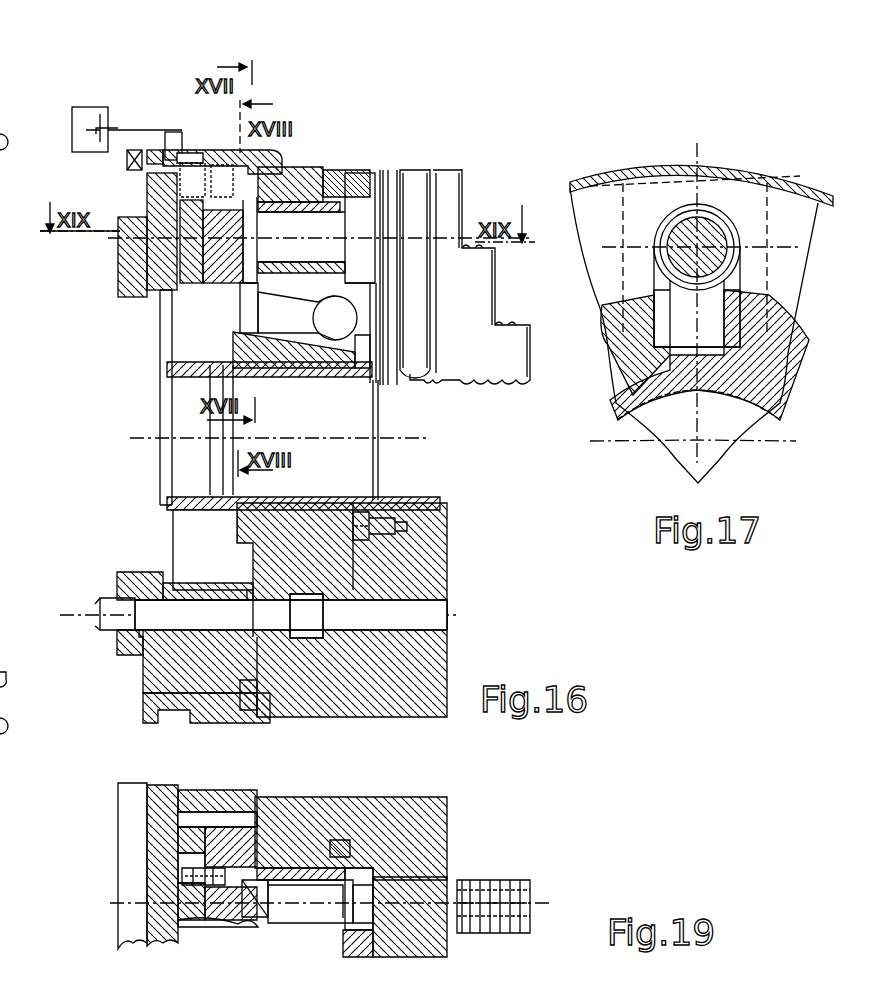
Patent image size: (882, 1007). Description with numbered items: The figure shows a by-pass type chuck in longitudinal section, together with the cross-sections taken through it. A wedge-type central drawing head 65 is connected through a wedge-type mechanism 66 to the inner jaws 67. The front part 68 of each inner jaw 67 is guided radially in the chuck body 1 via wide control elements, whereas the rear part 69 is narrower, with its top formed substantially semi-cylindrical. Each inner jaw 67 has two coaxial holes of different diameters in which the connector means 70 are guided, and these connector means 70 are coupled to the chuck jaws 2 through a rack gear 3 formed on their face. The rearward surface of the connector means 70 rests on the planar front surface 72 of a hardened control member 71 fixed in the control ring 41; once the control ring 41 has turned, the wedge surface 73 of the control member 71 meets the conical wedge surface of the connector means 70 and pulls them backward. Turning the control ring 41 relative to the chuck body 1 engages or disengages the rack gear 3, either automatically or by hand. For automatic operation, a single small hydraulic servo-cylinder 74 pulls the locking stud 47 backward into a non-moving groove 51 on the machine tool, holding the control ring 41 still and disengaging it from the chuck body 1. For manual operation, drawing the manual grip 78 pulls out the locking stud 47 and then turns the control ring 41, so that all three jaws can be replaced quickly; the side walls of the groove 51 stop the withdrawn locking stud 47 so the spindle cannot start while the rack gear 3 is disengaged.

In FIG. 16, the chuck body 1 is at (446, 549).
In FIG. 19, the chuck body 1 is at (438, 814).
In FIG. 16, the chuck jaws 2 is at (460, 220).
In FIG. 19, the chuck jaws 2 is at (508, 880).
In FIG. 16, the rack gear 3 is at (415, 238).
In FIG. 16, the control ring 41 is at (118, 257).
In FIG. 17, the control ring 41 is at (660, 180).
In FIG. 16, the locking stud 47 is at (285, 162).
In FIG. 16, the groove 51 is at (127, 169).
In FIG. 16, the central drawing head 65 is at (235, 351).
In FIG. 17, the central drawing head 65 is at (783, 370).
In FIG. 16, the wedge-type mechanism 66 is at (270, 318).
In FIG. 17, the wedge-type mechanism 66 is at (748, 325).
In FIG. 16, the inner jaws 67 is at (364, 180).
In FIG. 17, the inner jaws 67 is at (640, 300).
In FIG. 19, the inner jaws 67 is at (356, 872).
In FIG. 19, the front part of the inner jaws 68 is at (373, 834).
In FIG. 19, the rear part of the inner jaws 69 is at (273, 880).
In FIG. 16, the connector means 70 is at (392, 232).
In FIG. 17, the connector means 70 is at (702, 233).
In FIG. 19, the connector means 70 is at (300, 896).
In FIG. 19, the control member 71 is at (180, 878).
In FIG. 19, the planar front surface 72 is at (178, 924).
In FIG. 19, the wedge surface 73 is at (173, 838).
In FIG. 16, the hydraulic servo-cylinder 74 is at (75, 121).
In FIG. 16, the manual grip 78 is at (157, 148).